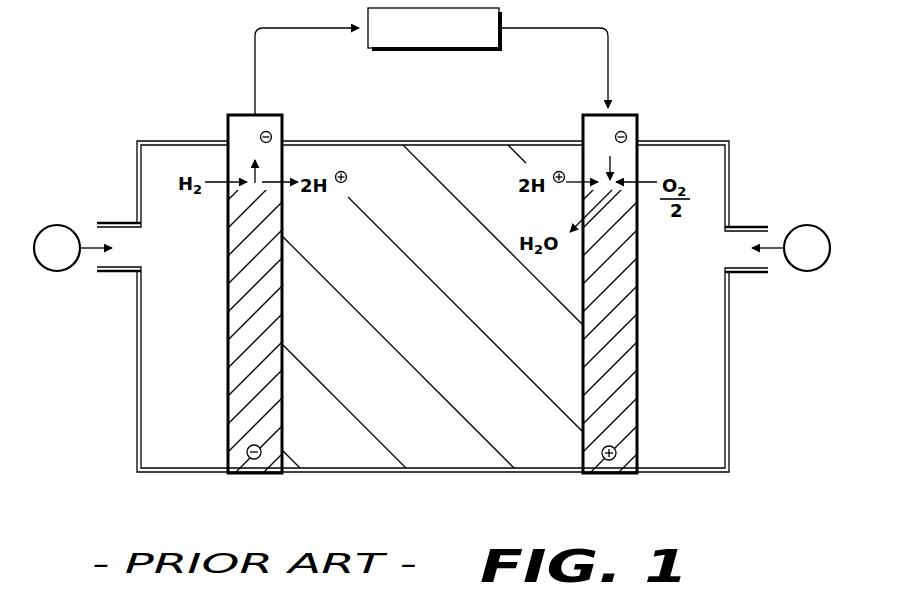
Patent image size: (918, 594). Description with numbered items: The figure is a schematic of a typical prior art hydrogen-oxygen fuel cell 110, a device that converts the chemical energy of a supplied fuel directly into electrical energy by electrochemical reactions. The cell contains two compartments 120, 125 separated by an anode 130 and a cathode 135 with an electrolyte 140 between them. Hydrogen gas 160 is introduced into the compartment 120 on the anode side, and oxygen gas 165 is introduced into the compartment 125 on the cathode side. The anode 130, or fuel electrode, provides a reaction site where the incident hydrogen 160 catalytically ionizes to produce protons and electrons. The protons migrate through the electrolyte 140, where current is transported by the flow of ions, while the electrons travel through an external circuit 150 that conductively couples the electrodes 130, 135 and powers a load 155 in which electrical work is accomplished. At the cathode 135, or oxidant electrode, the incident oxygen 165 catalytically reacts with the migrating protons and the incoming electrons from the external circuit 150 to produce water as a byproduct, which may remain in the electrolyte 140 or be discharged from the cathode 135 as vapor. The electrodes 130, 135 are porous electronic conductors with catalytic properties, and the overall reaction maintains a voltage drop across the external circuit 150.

The fuel cell 110 is at (771, 574).
The compartment 120 is at (201, 362).
The compartment 125 is at (700, 362).
The anode 130 is at (254, 459).
The cathode 135 is at (609, 460).
The electrolyte 140 is at (457, 362).
The external circuit 150 is at (254, 71).
The load 155 is at (436, 51).
The hydrogen gas 160 is at (60, 225).
The oxygen gas 165 is at (804, 225).